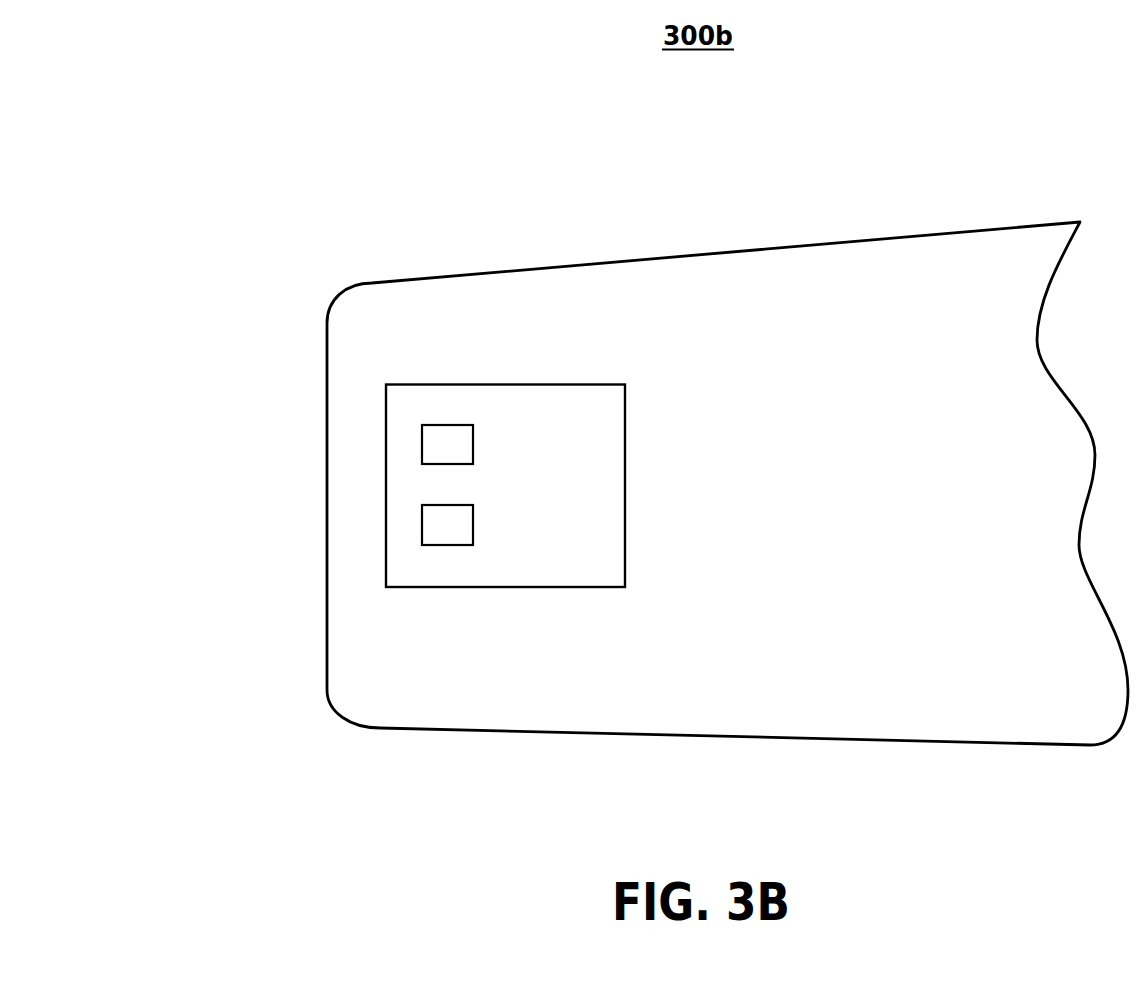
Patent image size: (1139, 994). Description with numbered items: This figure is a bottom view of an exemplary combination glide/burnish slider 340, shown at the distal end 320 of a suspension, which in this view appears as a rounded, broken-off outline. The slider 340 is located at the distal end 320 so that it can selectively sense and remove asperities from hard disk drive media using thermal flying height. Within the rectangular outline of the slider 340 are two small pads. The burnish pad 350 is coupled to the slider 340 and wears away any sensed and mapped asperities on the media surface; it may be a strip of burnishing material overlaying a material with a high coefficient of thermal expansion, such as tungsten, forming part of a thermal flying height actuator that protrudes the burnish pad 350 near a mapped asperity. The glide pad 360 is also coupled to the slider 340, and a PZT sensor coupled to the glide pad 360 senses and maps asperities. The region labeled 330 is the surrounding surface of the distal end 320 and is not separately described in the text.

The distal end 320 is at (625, 262).
The main surface region 330 is at (802, 488).
The combination glide/burnish slider 340 is at (565, 548).
The burnish pad 350 is at (447, 445).
The glide pad 360 is at (447, 525).